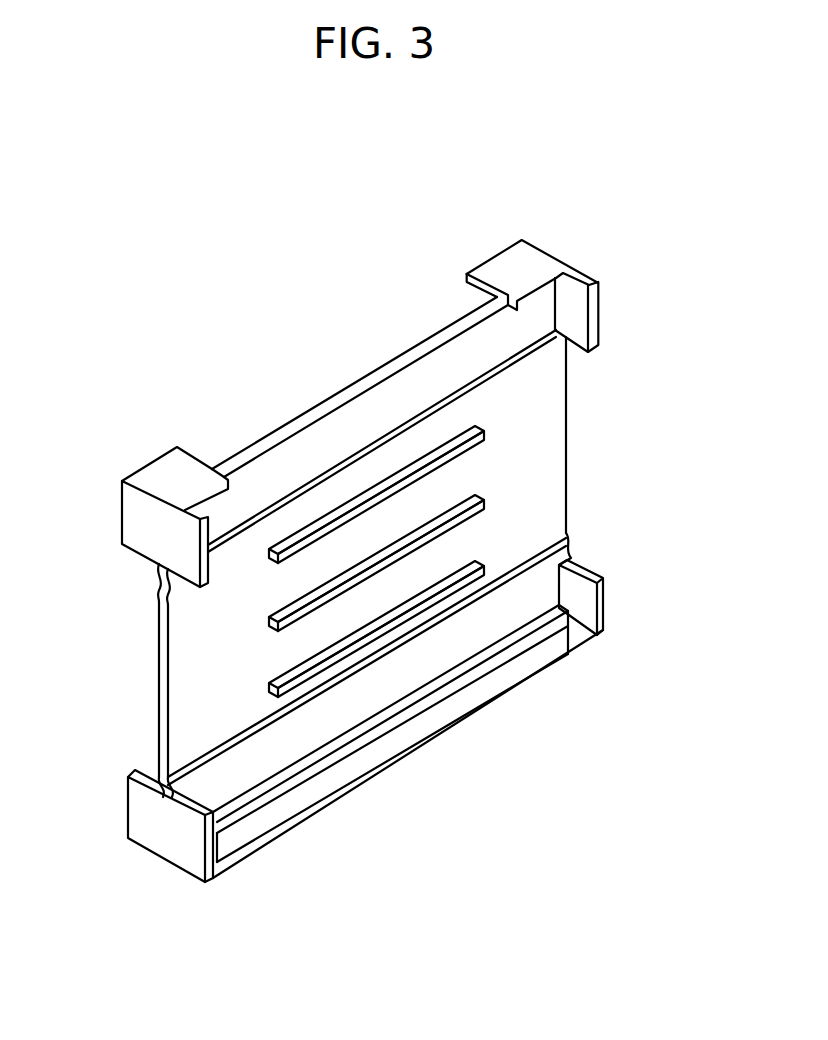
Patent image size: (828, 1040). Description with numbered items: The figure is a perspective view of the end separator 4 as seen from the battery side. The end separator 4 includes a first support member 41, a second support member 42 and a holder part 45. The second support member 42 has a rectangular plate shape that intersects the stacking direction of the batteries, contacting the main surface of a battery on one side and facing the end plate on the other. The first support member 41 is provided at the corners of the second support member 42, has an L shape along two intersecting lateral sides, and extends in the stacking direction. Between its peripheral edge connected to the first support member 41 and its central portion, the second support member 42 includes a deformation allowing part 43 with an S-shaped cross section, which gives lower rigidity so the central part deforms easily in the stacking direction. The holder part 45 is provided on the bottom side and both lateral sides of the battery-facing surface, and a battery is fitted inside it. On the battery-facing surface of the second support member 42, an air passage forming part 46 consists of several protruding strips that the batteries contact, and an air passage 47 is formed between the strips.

The end separator 4 is at (338, 368).
The first support member 41 is at (148, 468).
The second support member 42 is at (175, 662).
The deformation allowing part 43 is at (157, 580).
The holder part 45 is at (588, 280).
The air passage forming part 46 is at (484, 433).
The air passage 47 is at (461, 478).